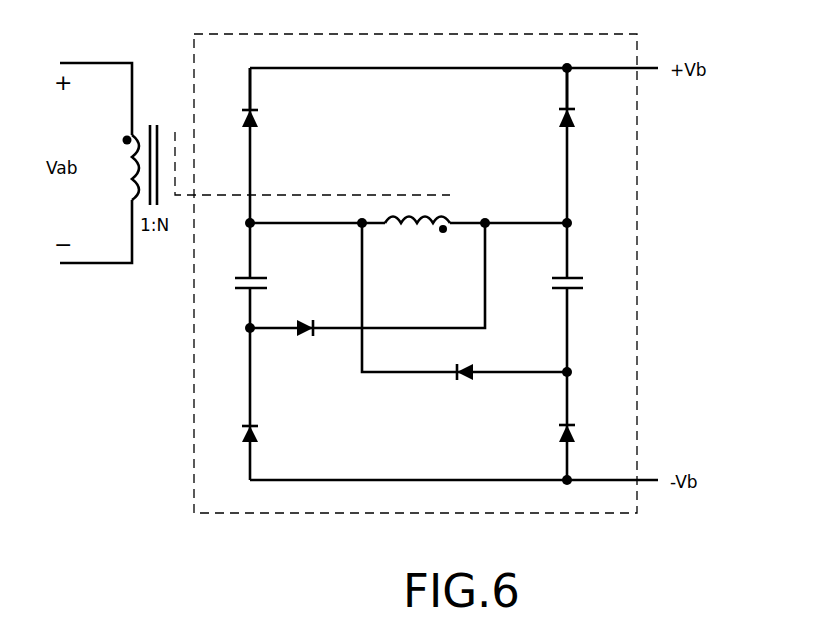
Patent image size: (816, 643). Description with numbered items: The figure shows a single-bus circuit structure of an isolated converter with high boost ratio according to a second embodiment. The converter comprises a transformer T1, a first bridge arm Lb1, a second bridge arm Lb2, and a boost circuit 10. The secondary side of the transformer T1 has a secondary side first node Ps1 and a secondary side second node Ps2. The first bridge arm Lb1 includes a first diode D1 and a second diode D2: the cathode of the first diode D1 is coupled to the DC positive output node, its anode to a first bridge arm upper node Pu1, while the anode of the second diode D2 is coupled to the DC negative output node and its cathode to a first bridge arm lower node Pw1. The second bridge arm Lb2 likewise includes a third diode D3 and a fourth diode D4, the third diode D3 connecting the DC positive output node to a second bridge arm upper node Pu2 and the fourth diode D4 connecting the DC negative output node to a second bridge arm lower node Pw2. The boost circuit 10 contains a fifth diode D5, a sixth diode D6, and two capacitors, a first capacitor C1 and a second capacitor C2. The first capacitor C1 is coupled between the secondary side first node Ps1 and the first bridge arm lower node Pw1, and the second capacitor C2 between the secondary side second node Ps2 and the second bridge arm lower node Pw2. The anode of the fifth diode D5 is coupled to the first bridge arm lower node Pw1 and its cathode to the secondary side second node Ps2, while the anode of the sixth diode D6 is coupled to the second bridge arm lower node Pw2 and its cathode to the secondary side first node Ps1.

The boost circuit 10 is at (334, 384).
The transformer T1 is at (141, 149).
The first diode D1 is at (233, 112).
The second diode D2 is at (232, 428).
The third diode D3 is at (582, 112).
The fourth diode D4 is at (582, 427).
The fifth diode D5 is at (301, 348).
The sixth diode D6 is at (465, 391).
The first capacitor C1 is at (235, 267).
The second capacitor C2 is at (580, 270).
The first bridge arm Lb1 is at (248, 85).
The second bridge arm Lb2 is at (569, 85).
The first bridge arm upper node Pu1 is at (245, 223).
The second bridge arm upper node Pu2 is at (570, 223).
The first bridge arm lower node Pw1 is at (245, 328).
The second bridge arm lower node Pw2 is at (570, 372).
The secondary side first node Ps1 is at (362, 219).
The secondary side second node Ps2 is at (486, 219).